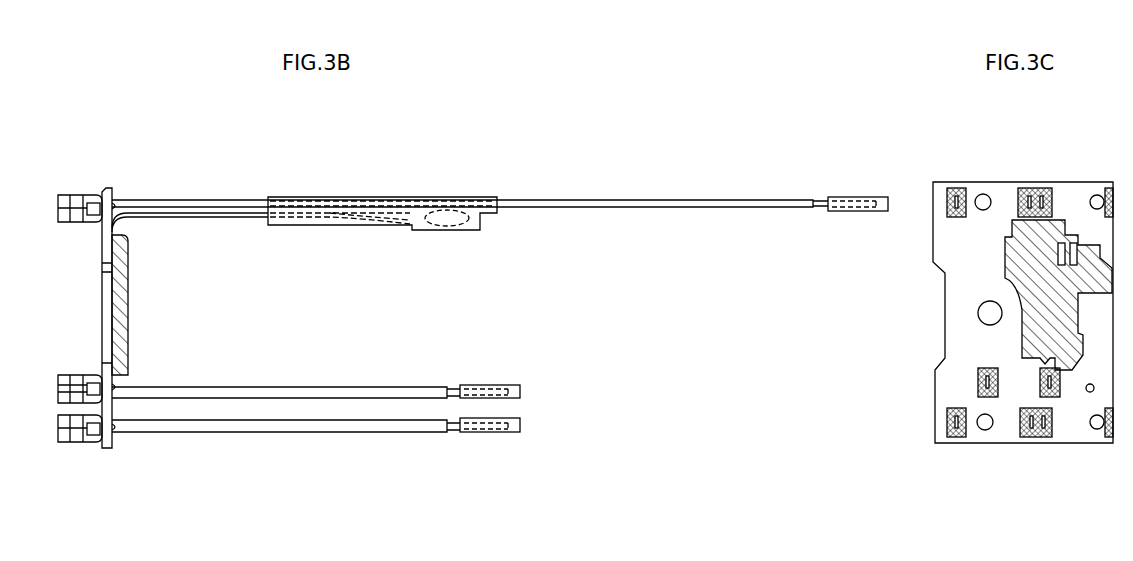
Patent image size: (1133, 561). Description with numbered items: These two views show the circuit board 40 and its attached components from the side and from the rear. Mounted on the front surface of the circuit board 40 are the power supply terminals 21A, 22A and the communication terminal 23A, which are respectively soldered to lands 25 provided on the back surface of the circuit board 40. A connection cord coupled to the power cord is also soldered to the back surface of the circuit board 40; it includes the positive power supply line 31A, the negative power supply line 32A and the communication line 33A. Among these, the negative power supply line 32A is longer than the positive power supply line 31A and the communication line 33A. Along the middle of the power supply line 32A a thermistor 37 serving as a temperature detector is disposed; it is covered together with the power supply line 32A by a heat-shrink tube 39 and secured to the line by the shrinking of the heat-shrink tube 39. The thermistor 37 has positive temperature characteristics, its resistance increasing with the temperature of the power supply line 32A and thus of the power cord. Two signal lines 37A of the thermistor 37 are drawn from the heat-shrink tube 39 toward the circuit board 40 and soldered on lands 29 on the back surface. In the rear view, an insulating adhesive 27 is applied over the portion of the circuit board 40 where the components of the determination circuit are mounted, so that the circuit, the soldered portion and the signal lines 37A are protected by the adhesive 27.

In FIG. 3B, the power supply terminal 21A is at (64, 445).
In FIG. 3B, the power supply terminal 22A is at (66, 193).
In FIG. 3B, the communication terminal 23A is at (64, 375).
In FIG. 3C, the lands 25 is at (1107, 188).
In FIG. 3B, the insulating adhesive 27 is at (125, 304).
In FIG. 3C, the insulating adhesive 27 is at (1025, 332).
In FIG. 3C, the lands 29 is at (1058, 258).
In FIG. 3B, the positive power supply line 31A is at (286, 432).
In FIG. 3B, the negative power supply line 32A is at (578, 200).
In FIG. 3B, the communication line 33A is at (285, 387).
In FIG. 3B, the thermistor 37 is at (447, 226).
In FIG. 3B, the signal lines 37A is at (206, 218).
In FIG. 3B, the heat-shrink tube 39 is at (364, 197).
In FIG. 3B, the circuit board 40 is at (108, 188).
In FIG. 3C, the circuit board 40 is at (940, 190).